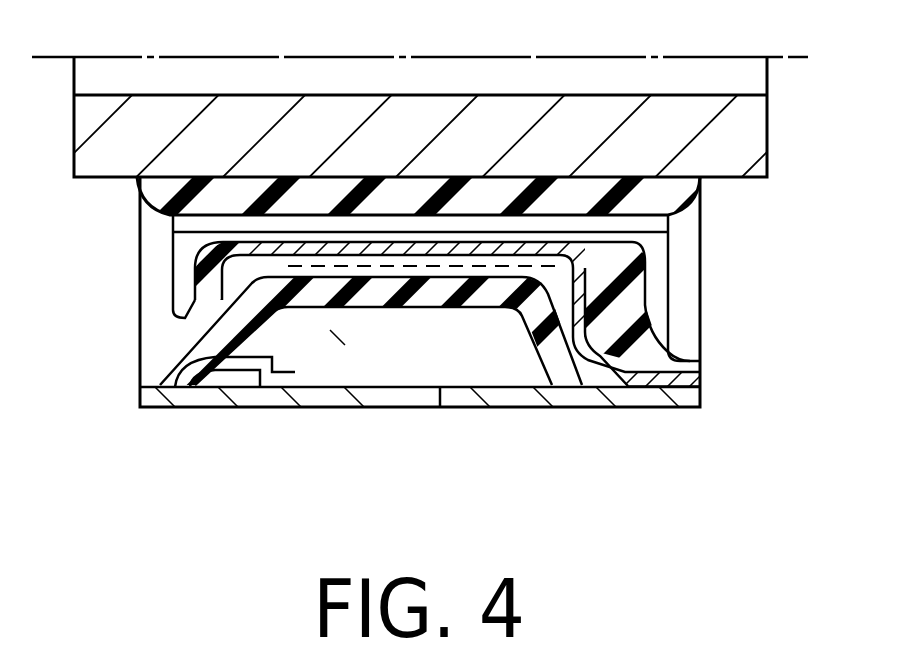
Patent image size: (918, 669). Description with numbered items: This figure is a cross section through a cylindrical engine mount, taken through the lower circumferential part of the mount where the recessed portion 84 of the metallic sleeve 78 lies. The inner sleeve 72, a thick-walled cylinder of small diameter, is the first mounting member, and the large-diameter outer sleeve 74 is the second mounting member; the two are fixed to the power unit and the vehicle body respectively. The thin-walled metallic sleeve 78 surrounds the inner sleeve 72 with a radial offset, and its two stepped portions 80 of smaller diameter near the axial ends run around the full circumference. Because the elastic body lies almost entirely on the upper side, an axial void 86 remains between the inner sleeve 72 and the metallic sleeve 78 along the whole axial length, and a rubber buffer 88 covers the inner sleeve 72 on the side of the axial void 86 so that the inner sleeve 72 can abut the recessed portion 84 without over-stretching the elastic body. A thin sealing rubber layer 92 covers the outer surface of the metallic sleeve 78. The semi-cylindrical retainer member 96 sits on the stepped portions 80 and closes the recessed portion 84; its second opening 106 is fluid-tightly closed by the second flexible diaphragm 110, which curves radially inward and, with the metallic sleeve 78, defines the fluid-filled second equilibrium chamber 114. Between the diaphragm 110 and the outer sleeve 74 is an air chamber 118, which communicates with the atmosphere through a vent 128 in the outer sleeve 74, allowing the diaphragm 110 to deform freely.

The inner sleeve 72 is at (738, 153).
The outer sleeve 74 is at (522, 397).
The metallic sleeve 78 is at (170, 412).
The stepped portions 80 is at (603, 330).
The recessed portion 84 is at (392, 250).
The axial void 86 is at (473, 228).
The rubber buffer 88 is at (400, 195).
The sealing rubber layer 92 is at (622, 378).
The retainer member 96 is at (257, 407).
The second opening 106 is at (311, 407).
The second flexible diaphragm 110 is at (543, 313).
The second equilibrium chamber 114 is at (283, 277).
The air chamber 118 is at (340, 346).
The vent 128 is at (404, 390).